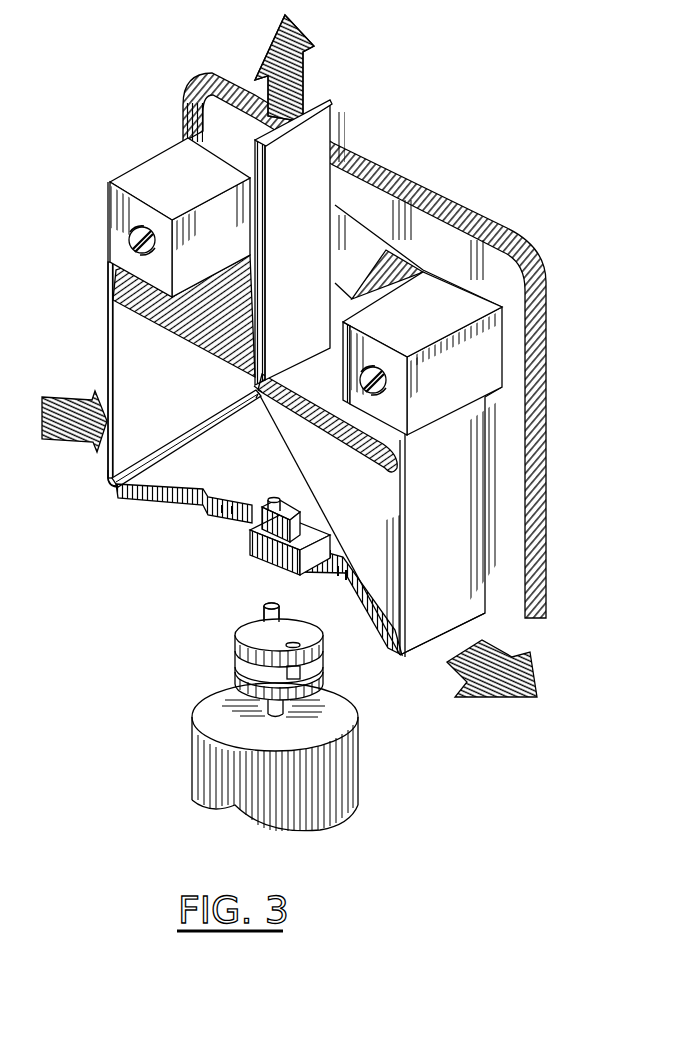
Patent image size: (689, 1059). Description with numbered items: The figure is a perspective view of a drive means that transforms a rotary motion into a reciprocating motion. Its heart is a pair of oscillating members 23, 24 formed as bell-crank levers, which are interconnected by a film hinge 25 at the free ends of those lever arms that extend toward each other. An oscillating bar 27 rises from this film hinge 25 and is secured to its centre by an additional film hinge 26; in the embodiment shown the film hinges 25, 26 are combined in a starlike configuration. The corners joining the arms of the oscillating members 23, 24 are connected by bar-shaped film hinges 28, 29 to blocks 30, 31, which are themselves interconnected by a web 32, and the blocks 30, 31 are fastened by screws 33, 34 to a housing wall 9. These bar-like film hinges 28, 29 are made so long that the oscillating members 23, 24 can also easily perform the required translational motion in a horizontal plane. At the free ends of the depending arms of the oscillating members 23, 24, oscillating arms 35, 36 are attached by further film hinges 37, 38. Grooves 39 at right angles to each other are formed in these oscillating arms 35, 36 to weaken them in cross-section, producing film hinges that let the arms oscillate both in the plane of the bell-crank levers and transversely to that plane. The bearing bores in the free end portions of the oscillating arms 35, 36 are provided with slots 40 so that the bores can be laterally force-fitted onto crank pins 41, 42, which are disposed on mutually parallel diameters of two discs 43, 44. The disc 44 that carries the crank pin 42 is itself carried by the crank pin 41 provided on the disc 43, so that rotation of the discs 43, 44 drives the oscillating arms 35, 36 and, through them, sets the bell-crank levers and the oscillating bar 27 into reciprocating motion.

The housing wall 9 is at (364, 345).
The oscillating member 23 is at (170, 397).
The oscillating member 24 is at (368, 506).
The film hinge 25 is at (257, 394).
The additional film hinge 26 is at (280, 357).
The oscillating bar 27 is at (386, 169).
The bar-shaped film hinge 28 is at (399, 452).
The bar-shaped film hinge 29 is at (120, 278).
The block 30 is at (428, 326).
The block 31 is at (198, 185).
The web 32 is at (472, 240).
The screw 33 is at (387, 378).
The screw 34 is at (128, 241).
The oscillating arm 35 is at (176, 480).
The oscillating arm 36 is at (365, 622).
The film hinge 37 is at (110, 485).
The film hinge 38 is at (402, 656).
The grooves 39 is at (232, 511).
The slots 40 is at (250, 550).
The crank pin 41 is at (299, 668).
The crank pin 42 is at (275, 503).
The disc 43 is at (208, 697).
The disc 44 is at (237, 648).